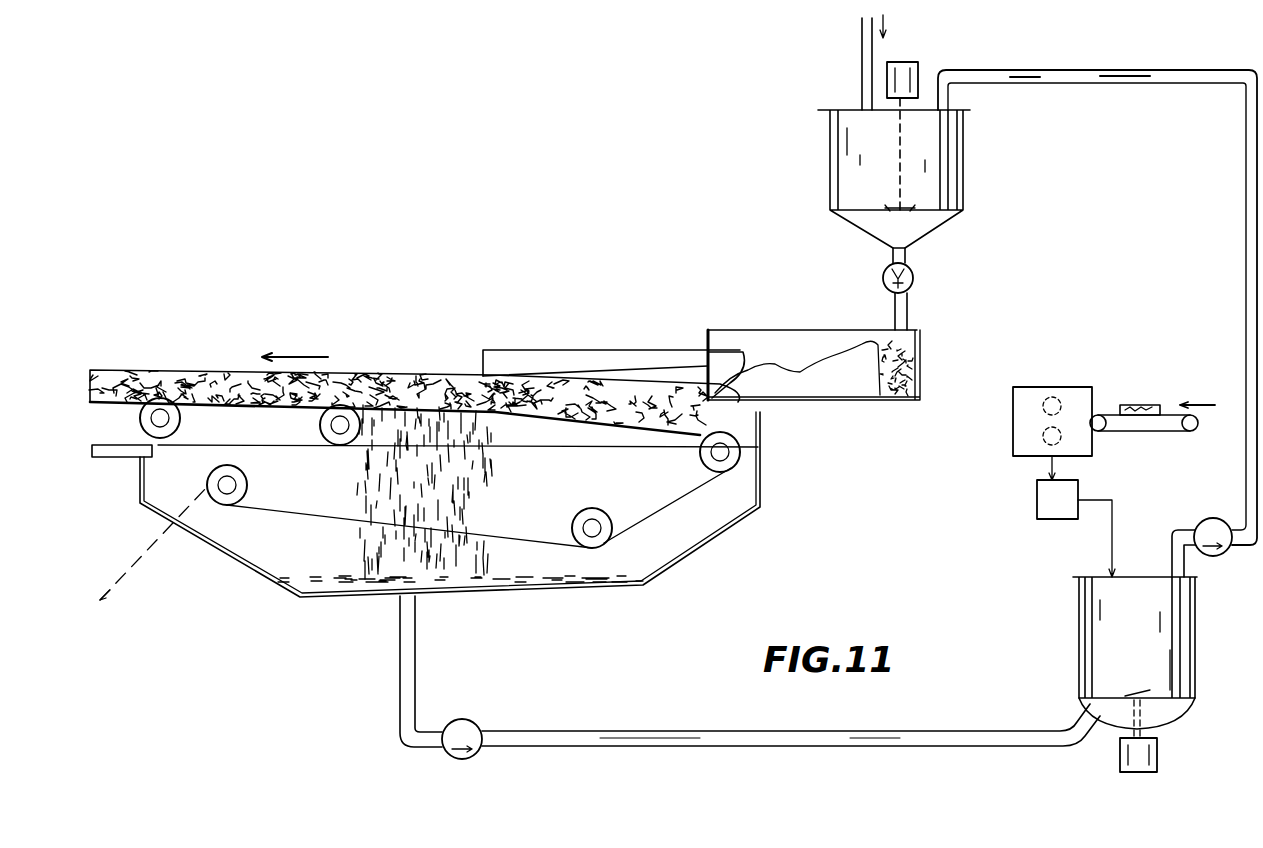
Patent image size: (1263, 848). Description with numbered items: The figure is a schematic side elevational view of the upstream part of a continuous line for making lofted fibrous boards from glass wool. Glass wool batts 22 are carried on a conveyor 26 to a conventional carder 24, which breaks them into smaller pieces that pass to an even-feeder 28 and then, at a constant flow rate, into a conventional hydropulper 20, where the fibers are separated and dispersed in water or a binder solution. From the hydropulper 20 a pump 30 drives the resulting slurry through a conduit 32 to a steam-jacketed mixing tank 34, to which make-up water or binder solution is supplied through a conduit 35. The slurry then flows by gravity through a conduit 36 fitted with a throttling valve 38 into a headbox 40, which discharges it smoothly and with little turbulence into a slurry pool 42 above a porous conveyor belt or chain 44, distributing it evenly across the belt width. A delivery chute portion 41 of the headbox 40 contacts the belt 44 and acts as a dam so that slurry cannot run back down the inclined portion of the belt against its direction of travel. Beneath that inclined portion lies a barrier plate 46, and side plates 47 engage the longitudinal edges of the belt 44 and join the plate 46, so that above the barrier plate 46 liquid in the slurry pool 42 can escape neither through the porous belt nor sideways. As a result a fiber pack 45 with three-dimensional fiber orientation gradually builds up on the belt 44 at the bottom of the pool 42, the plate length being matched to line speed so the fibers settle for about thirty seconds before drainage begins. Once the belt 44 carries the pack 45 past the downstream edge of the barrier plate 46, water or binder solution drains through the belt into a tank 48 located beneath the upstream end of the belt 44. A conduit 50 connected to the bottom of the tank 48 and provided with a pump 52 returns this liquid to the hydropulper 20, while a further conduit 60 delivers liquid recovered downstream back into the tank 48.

The hydropulper 20 is at (1197, 652).
The glass wool batts 22 is at (1136, 405).
The carder 24 is at (1050, 387).
The conveyor 26 is at (1140, 431).
The even-feeder 28 is at (1078, 490).
The pump 30 is at (1213, 557).
The conduit 32 is at (1078, 70).
The mixing tank 34 is at (968, 178).
The conduit 35 is at (862, 58).
The conduit 36 is at (907, 312).
The throttling valve 38 is at (913, 278).
The headbox 40 is at (921, 378).
The delivery chute portion 41 is at (700, 440).
The slurry pool 42 is at (600, 376).
The porous conveyor belt 44 is at (670, 503).
The fiber pack 45 is at (196, 370).
The barrier plate 46 is at (623, 447).
The side plates 47 is at (494, 350).
The tank 48 is at (686, 565).
The conduit 50 is at (928, 731).
The pump 52 is at (480, 722).
The conduit 60 is at (140, 467).